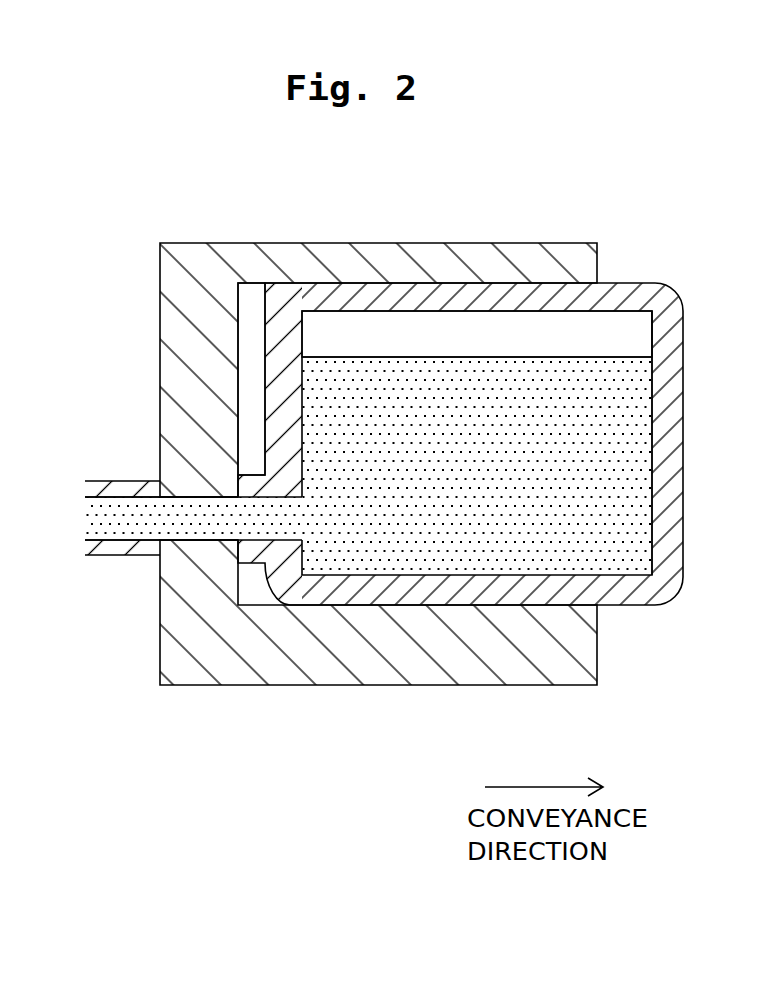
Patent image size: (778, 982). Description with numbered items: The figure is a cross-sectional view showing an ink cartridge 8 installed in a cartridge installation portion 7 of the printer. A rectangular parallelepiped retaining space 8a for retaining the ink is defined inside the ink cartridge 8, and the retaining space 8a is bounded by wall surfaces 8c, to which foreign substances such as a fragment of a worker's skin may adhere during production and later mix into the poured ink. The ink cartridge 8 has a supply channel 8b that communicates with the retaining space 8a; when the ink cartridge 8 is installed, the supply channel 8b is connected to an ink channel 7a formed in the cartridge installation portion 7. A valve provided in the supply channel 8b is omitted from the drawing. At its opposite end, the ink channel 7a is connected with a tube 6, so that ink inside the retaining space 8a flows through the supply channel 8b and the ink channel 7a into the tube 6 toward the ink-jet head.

The tube 6 is at (110, 547).
The cartridge installation portion 7 is at (253, 290).
The ink channel 7a is at (185, 523).
The ink cartridge 8 is at (670, 597).
The retaining space 8a is at (450, 328).
The supply channel 8b is at (260, 517).
The wall surfaces 8c is at (652, 400).